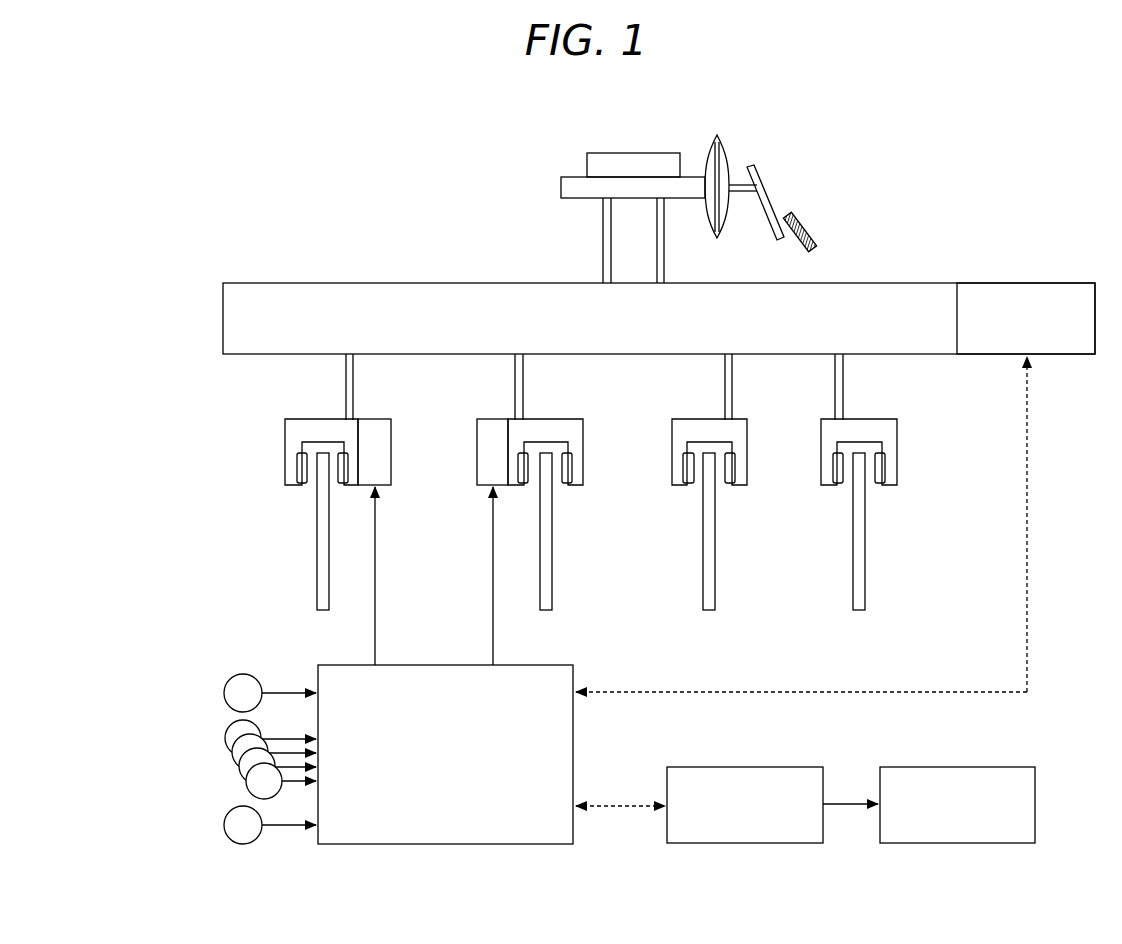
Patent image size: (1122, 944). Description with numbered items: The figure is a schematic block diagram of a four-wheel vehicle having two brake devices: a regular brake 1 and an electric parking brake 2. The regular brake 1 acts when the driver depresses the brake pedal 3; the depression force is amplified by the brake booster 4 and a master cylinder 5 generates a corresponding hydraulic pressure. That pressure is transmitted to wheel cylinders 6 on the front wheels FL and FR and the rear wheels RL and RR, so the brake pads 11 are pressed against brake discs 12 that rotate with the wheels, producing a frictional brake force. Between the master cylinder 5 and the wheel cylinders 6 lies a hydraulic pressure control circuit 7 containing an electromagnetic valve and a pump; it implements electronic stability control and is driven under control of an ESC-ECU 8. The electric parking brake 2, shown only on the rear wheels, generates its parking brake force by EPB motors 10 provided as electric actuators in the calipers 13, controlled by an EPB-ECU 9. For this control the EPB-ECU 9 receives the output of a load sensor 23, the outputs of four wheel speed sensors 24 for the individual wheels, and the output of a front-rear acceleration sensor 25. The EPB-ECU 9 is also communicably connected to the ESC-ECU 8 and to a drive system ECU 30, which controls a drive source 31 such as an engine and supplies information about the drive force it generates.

The regular brake 1 is at (788, 164).
The electric parking brake 2 is at (400, 542).
The brake pedal 3 is at (800, 225).
The brake booster 4 is at (723, 150).
The master cylinder 5 is at (572, 178).
The wheel cylinders 6 is at (354, 418).
The hydraulic pressure control circuit 7 is at (913, 282).
The ESC-ECU 8 is at (1063, 282).
The EPB-ECU 9 is at (545, 845).
The EPB motors 10 is at (392, 445).
The brake pads 11 is at (298, 486).
The brake discs 12 is at (317, 545).
The calipers 13 is at (286, 416).
The load sensor 23 is at (231, 679).
The wheel speed sensor 24 is at (132, 712).
The front-rear acceleration sensor 25 is at (225, 827).
The drive system ECU 30 is at (788, 767).
The drive source 31 is at (1004, 767).